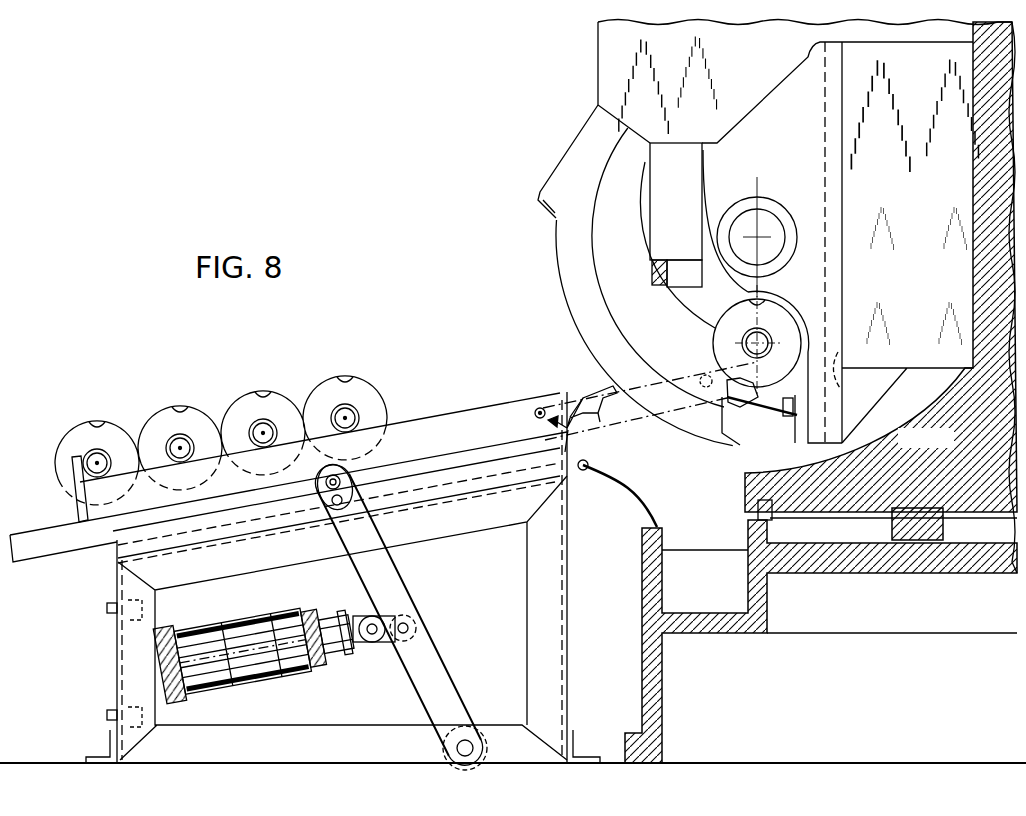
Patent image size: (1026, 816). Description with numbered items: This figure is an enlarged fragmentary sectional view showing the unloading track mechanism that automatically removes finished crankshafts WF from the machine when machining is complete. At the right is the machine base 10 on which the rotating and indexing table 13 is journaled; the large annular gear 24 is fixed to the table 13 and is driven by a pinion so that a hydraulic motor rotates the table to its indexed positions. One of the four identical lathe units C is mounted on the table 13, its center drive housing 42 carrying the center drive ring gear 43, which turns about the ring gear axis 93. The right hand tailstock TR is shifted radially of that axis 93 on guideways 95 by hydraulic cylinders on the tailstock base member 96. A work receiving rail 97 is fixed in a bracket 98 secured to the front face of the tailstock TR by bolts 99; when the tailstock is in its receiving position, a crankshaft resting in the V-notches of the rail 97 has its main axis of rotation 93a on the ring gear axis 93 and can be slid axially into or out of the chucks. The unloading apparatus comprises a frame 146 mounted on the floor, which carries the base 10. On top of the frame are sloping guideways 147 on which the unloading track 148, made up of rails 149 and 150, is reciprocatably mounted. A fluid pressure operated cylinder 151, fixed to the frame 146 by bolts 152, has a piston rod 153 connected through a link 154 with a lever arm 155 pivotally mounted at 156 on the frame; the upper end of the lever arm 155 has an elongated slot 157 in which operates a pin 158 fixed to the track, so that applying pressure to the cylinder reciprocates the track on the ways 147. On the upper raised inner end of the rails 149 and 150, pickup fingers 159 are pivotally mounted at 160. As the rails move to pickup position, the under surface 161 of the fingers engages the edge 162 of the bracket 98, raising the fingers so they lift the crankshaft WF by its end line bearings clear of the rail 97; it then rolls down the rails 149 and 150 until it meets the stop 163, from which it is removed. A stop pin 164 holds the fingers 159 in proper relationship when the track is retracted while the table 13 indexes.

The double center drive crankshaft lathe unit C is at (598, 52).
The right hand tailstock TR is at (772, 242).
The finished crankshaft WF is at (725, 316).
The circular base 10 is at (643, 686).
The rotating and indexing table 13 is at (881, 270).
The annular gear 24 is at (920, 540).
The center drive housing 42 is at (578, 162).
The center drive ring gear 43 is at (605, 258).
The axis of rotation of the center drive ring gears 93 is at (757, 237).
The main axis of rotation of the workpiece 93a is at (757, 340).
The guideway 95 is at (837, 380).
The tailstock base member 96 is at (910, 251).
The work receiving rail 97 is at (740, 408).
The bracket 98 is at (760, 412).
The bolt 99 is at (790, 417).
The frame 146 is at (122, 668).
The sloping guideways 147 is at (64, 538).
The unloading track 148 is at (450, 425).
The rail 149 is at (497, 410).
The rail 150 is at (432, 425).
The fluid pressure operated cylinder 151 is at (253, 662).
The bolt 152 is at (162, 627).
The piston rod 153 is at (297, 660).
The link 154 is at (385, 641).
The lever arm 155 is at (427, 655).
The pivot 156 is at (455, 748).
The elongated slot 157 is at (331, 502).
The pin 158 is at (352, 470).
The pickup finger 159 is at (540, 410).
The pivot 160 is at (583, 397).
The under surface of the pickup fingers 161 is at (586, 402).
The edge of the receiving rail bracket 162 is at (708, 378).
The stop 163 is at (72, 478).
The stop pin 164 is at (560, 424).